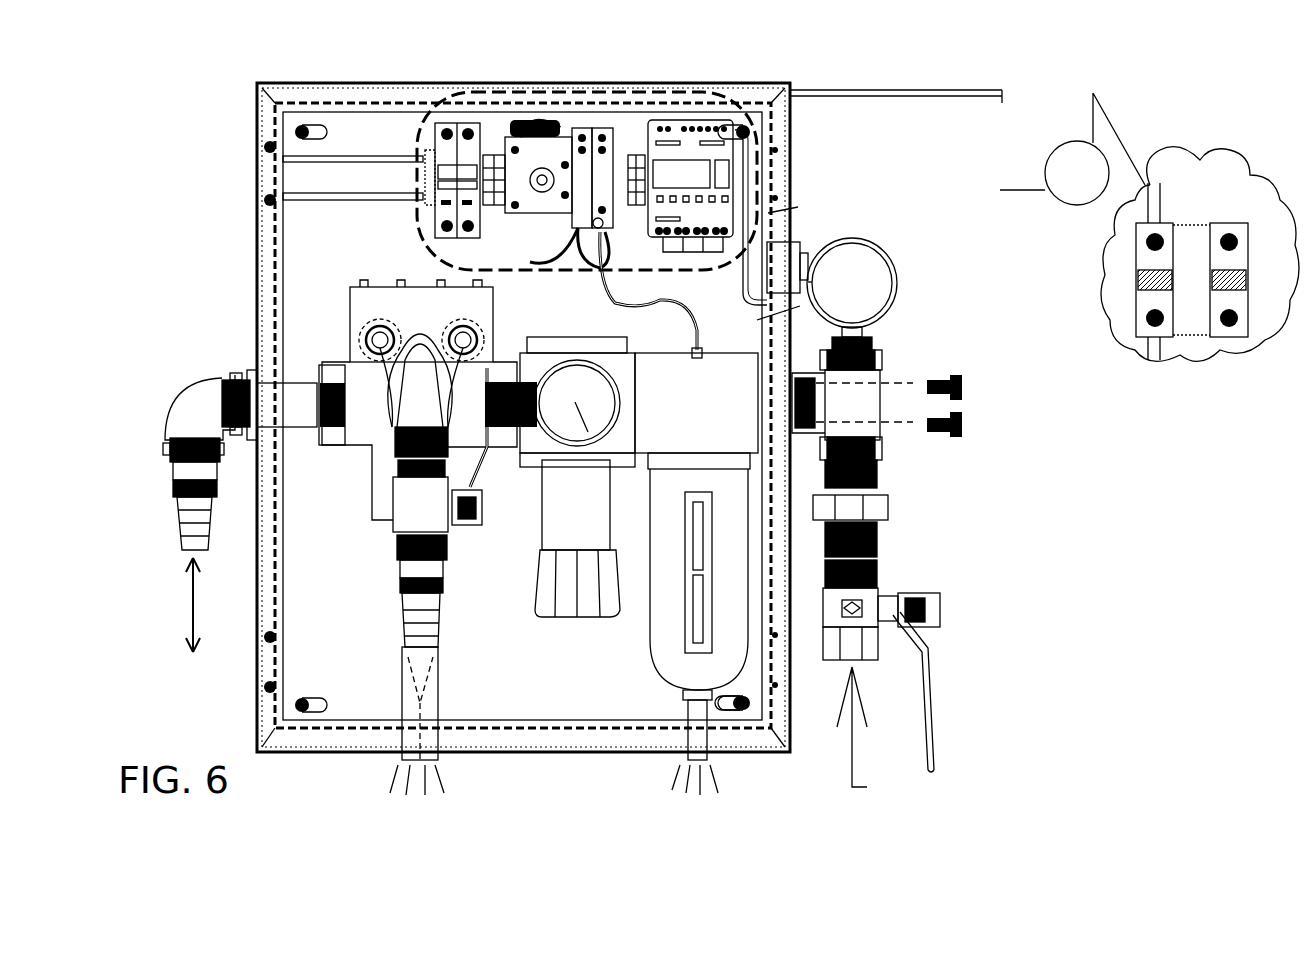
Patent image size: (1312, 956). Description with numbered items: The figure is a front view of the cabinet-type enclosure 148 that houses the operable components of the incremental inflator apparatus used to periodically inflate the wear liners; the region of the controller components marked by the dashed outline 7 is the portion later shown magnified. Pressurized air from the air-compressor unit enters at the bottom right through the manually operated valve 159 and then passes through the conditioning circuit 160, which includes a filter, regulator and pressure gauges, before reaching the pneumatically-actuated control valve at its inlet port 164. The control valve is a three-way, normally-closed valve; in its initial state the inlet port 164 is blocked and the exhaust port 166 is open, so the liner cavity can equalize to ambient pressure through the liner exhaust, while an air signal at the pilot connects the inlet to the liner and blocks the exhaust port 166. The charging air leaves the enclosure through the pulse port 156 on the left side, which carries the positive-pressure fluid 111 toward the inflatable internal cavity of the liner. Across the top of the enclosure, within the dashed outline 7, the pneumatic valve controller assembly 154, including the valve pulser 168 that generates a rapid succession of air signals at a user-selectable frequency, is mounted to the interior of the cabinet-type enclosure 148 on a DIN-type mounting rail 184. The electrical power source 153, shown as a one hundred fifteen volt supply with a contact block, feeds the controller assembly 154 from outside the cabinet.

The cabinet-type enclosure 148 is at (257, 112).
The valve pulser 168 is at (390, 98).
The pneumatic valve controller assembly 154 is at (383, 233).
The DIN-type mounting rail 184 is at (370, 205).
The controller 7 is at (758, 175).
The conditioning circuit 160 is at (872, 258).
The exhaust port 166 is at (398, 570).
The inlet port 164 is at (520, 445).
The manually operated valve 159 is at (880, 588).
The pulse port 156 is at (220, 378).
The positive-pressure fluid 111 is at (192, 597).
The electrical power source 153 is at (1070, 222).